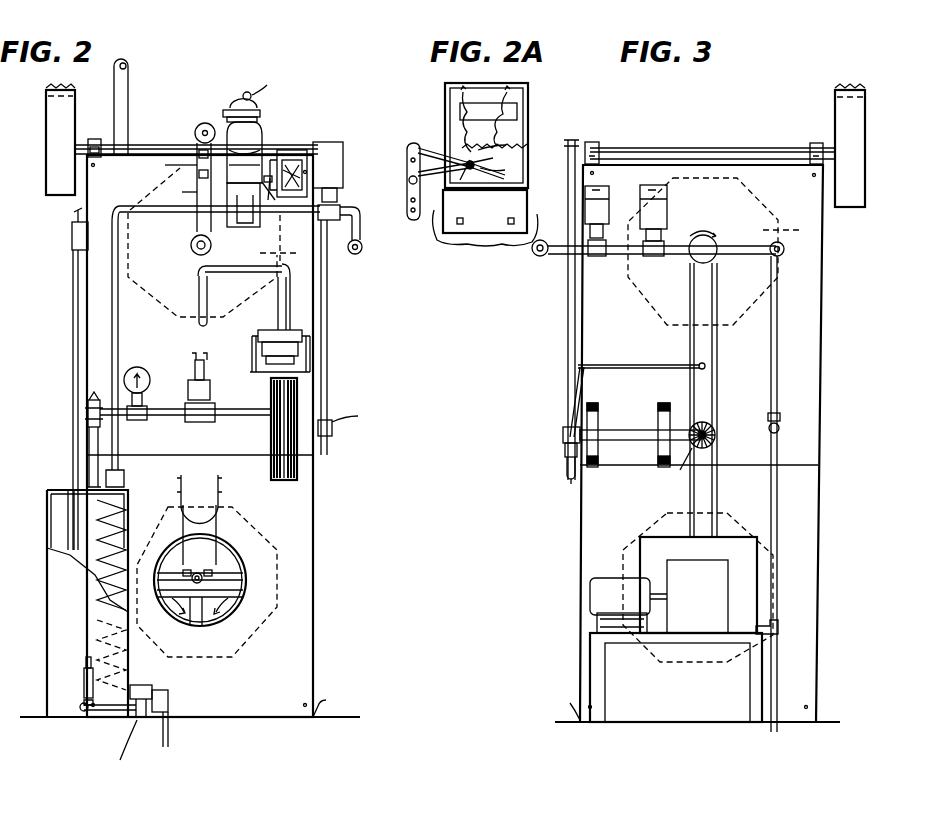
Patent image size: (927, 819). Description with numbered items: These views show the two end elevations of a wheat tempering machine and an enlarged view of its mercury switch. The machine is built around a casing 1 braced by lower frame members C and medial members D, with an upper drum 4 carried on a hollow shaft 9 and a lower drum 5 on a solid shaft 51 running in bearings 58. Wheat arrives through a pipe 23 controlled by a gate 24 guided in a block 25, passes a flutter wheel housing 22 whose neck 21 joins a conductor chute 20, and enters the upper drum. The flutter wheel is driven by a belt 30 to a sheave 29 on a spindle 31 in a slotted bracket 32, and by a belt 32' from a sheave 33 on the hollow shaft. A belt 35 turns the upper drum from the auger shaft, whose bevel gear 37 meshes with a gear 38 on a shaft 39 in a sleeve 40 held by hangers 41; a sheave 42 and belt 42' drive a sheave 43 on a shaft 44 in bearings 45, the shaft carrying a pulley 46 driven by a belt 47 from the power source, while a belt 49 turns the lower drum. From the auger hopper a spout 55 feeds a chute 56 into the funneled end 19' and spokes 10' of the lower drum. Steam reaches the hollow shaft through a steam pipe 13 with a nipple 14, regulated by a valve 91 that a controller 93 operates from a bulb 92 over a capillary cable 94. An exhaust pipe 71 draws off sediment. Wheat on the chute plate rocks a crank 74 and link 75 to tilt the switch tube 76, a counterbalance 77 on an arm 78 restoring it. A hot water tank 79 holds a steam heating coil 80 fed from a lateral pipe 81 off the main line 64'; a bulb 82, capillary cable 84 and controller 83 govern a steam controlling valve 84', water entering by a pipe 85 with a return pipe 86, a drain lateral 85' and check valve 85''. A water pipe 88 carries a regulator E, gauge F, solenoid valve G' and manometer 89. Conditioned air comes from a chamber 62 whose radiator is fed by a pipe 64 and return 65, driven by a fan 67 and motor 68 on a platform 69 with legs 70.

In FIG. 2, the casing 1 is at (200, 436).
In FIG. 2A, the casing 1 is at (463, 238).
In FIG. 3, the casing 1 is at (701, 443).
In FIG. 2, the drum 4 is at (282, 255).
In FIG. 3, the drum 4 is at (786, 229).
In FIG. 2, the drum 5 is at (280, 585).
In FIG. 3, the drum 5 is at (778, 580).
In FIG. 2, the hollow shaft 9 is at (196, 248).
In FIG. 3, the steam pipe 13 is at (676, 243).
In FIG. 3, the nipple 14 is at (770, 243).
In FIG. 2, the conductor chute 20 is at (247, 224).
In FIG. 2, the neck 21 is at (246, 152).
In FIG. 2, the flutter wheel housing 22 is at (252, 130).
In FIG. 2, the pipe 23 is at (268, 84).
In FIG. 2, the gate 24 is at (240, 92).
In FIG. 2, the block 25 is at (223, 110).
In FIG. 2, the sheave 29 is at (199, 120).
In FIG. 2, the belt 30 is at (227, 119).
In FIG. 2, the spindle 31 is at (195, 134).
In FIG. 2, the slotted bracket 32 is at (166, 166).
In FIG. 2, the belt 32' is at (163, 189).
In FIG. 2, the sheave 33 is at (191, 240).
In FIG. 3, the belt 35 is at (719, 352).
In FIG. 3, the bevel gear 37 is at (716, 435).
In FIG. 3, the bevel gear 38 is at (676, 470).
In FIG. 2, the shaft 39 is at (333, 430).
In FIG. 3, the shaft 39 is at (565, 450).
In FIG. 3, the sleeve 40 is at (626, 428).
In FIG. 3, the hangers 41 is at (656, 452).
In FIG. 2, the sheave 42 is at (356, 413).
In FIG. 3, the sheave 42 is at (556, 429).
In FIG. 2, the belt 42' is at (313, 351).
In FIG. 3, the belt 42' is at (560, 400).
In FIG. 2, the sheave 43 is at (266, 238).
In FIG. 3, the sheave 43 is at (578, 142).
In FIG. 2, the shaft 44 is at (134, 143).
In FIG. 3, the shaft 44 is at (706, 147).
In FIG. 2, the bearings 45 is at (93, 138).
In FIG. 3, the bearings 45 is at (600, 144).
In FIG. 2, the pulley 46 is at (62, 116).
In FIG. 3, the pulley 46 is at (868, 118).
In FIG. 2, the belt 47 is at (50, 92).
In FIG. 3, the belt 47 is at (866, 92).
In FIG. 3, the belt 49 is at (720, 486).
In FIG. 2, the shaft 51 is at (199, 573).
In FIG. 2, the spout 55 is at (210, 480).
In FIG. 2, the chute 56 is at (238, 510).
In FIG. 2, the bearings 58 is at (212, 570).
In FIG. 3, the chamber 62 is at (648, 560).
In FIG. 3, the pipe 64 is at (790, 494).
In FIG. 2, the main line 64' is at (374, 245).
In FIG. 3, the main line 64' is at (526, 265).
In FIG. 3, the return 65 is at (781, 654).
In FIG. 3, the fan 67 is at (697, 596).
In FIG. 3, the electric motor 68 is at (605, 578).
In FIG. 3, the platform 69 is at (660, 640).
In FIG. 3, the legs 70 is at (600, 700).
In FIG. 2, the exhaust pipe 71 is at (128, 78).
In FIG. 2, the crank 74 is at (350, 223).
In FIG. 2A, the crank 74 is at (406, 212).
In FIG. 2, the link 75 is at (283, 170).
In FIG. 2A, the link 75 is at (405, 190).
In FIG. 2, the switch tube 76 is at (300, 170).
In FIG. 2A, the switch tube 76 is at (520, 135).
In FIG. 2, the counterbalance 77 is at (275, 200).
In FIG. 2, the arm 78 is at (270, 185).
In FIG. 2, the hot water tank 79 is at (50, 598).
In FIG. 2, the steam heating coil 80 is at (125, 495).
In FIG. 2, the steam lateral pipe 81 is at (118, 330).
In FIG. 2, the control temperature bulb 82 is at (68, 510).
In FIG. 2, the temperature controller 83 is at (72, 238).
In FIG. 2, the capillary cable 84 is at (61, 400).
In FIG. 2, the steam controlling valve 84' is at (350, 297).
In FIG. 2, the pipe 85 is at (71, 679).
In FIG. 2, the lateral pipe 85' is at (108, 725).
In FIG. 2, the check valve 85'' is at (130, 750).
In FIG. 2, the pipe 86 is at (164, 736).
In FIG. 2, the water pipe 88 is at (208, 308).
In FIG. 3, the water pipe 88 is at (596, 203).
In FIG. 2, the manometer 89 is at (297, 392).
In FIG. 3, the steam controlling valve 91 is at (656, 208).
In FIG. 3, the bulb 92 is at (708, 368).
In FIG. 3, the temperature controller 93 is at (567, 468).
In FIG. 3, the capillary cable 94 is at (570, 484).
In FIG. 2, the frame members C is at (324, 700).
In FIG. 3, the frame members C is at (565, 704).
In FIG. 2, the frame members D is at (257, 607).
In FIG. 2, the water pressure regulator E is at (88, 400).
In FIG. 2, the pressure gauge F is at (150, 382).
In FIG. 2, the valve G' is at (213, 387).
In FIG. 2, the spokes 10' is at (228, 635).
In FIG. 2, the funneled flange 19' is at (180, 635).